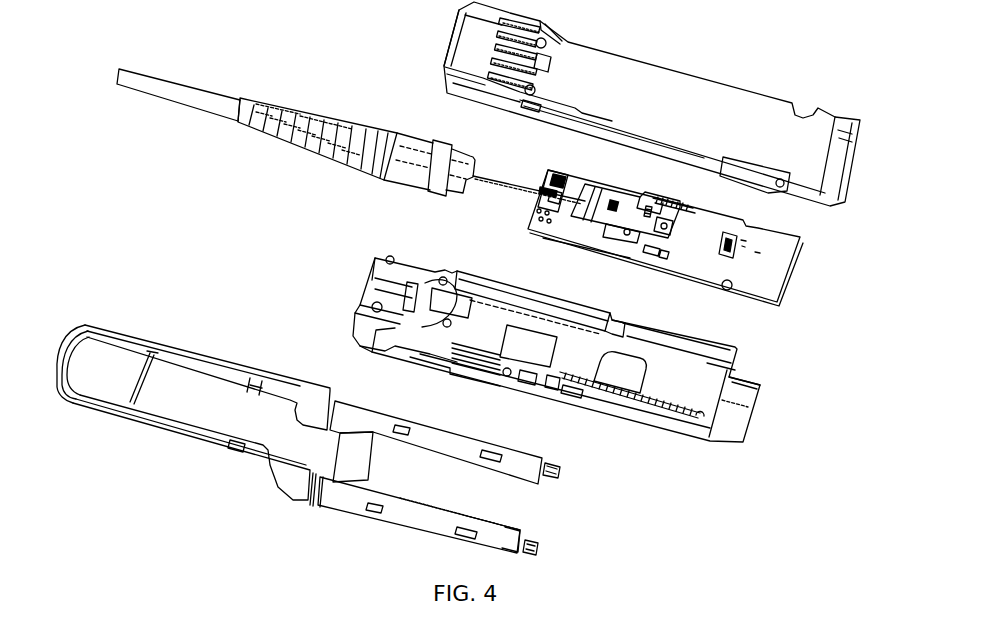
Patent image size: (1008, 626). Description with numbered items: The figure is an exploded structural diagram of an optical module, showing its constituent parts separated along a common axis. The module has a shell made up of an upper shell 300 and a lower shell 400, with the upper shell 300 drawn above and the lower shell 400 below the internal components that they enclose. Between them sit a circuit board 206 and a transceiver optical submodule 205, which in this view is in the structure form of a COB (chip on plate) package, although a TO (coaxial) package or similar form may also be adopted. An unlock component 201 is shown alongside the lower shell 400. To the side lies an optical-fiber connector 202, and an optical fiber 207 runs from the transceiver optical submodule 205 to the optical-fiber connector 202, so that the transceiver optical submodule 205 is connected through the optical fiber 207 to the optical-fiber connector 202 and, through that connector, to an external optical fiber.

The upper shell 300 is at (686, 50).
The lower shell 400 is at (699, 455).
The unlock component 201 is at (328, 397).
The optical-fiber connector 202 is at (347, 141).
The transceiver optical submodule 205 is at (633, 202).
The circuit board 206 is at (744, 275).
The optical fiber 207 is at (498, 182).